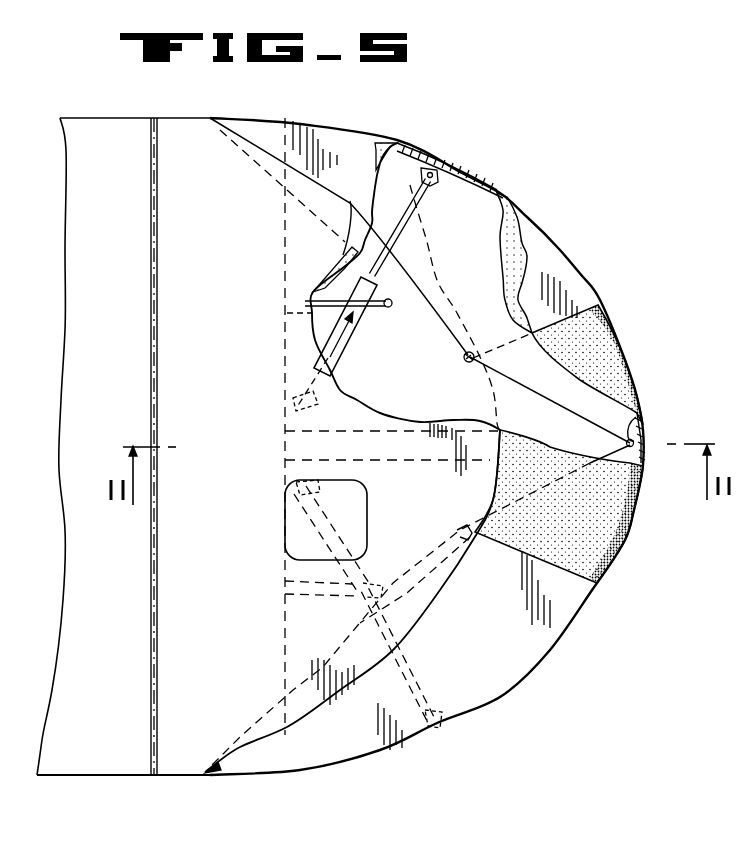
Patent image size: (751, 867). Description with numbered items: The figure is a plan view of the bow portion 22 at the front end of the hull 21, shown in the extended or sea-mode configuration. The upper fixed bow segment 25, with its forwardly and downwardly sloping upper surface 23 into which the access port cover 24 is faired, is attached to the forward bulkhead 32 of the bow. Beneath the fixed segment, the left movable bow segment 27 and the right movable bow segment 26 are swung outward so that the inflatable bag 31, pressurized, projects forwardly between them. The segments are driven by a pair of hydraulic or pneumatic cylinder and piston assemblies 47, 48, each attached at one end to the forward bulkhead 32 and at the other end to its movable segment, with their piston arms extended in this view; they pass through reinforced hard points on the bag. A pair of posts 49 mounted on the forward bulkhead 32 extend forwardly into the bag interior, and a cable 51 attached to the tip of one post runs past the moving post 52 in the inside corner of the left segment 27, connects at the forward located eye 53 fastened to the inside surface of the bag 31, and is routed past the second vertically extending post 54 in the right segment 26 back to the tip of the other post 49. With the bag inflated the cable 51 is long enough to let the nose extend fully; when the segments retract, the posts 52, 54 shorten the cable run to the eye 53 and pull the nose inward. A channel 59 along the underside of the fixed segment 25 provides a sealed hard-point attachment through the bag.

The hull 21 is at (119, 204).
The bow portion 22 is at (507, 193).
The upper surface 23 is at (259, 461).
The access port cover 24 is at (288, 521).
The upper fixed bow segment 25 is at (240, 747).
The right movable bow segment 26 is at (537, 660).
The left movable bow segment 27 is at (563, 258).
The inflatable bag 31 is at (613, 345).
The forward bulkhead 32 is at (285, 229).
The cylinder and piston assembly 47 is at (330, 512).
The cylinder and piston assembly 48 is at (346, 346).
The posts 49 is at (305, 303).
The cable 51 is at (528, 392).
The moving post 52 is at (468, 361).
The eye 53 is at (640, 418).
The second vertically extending post 54 is at (468, 546).
The channel 59 is at (380, 460).